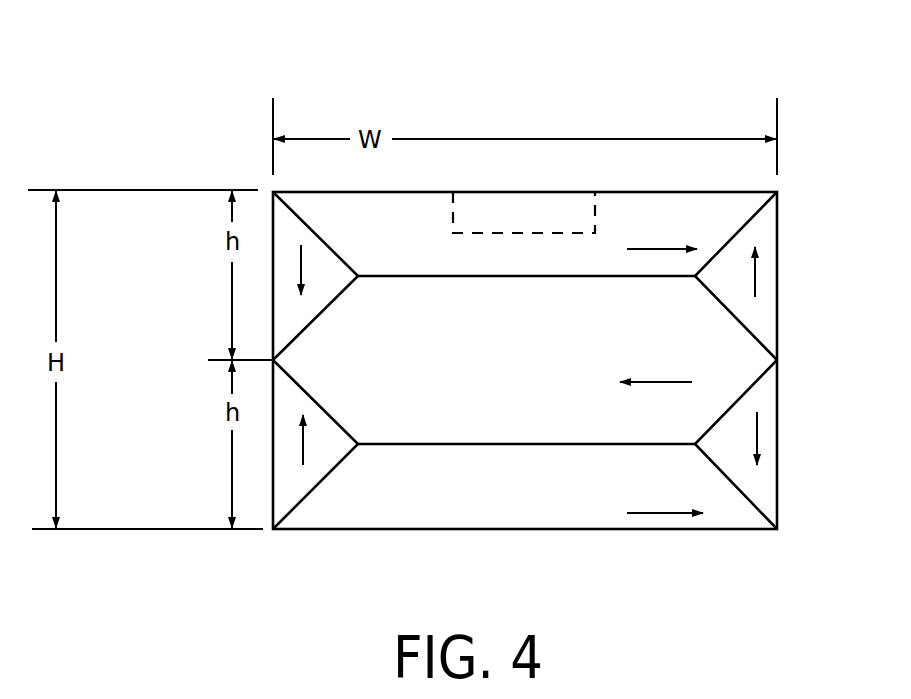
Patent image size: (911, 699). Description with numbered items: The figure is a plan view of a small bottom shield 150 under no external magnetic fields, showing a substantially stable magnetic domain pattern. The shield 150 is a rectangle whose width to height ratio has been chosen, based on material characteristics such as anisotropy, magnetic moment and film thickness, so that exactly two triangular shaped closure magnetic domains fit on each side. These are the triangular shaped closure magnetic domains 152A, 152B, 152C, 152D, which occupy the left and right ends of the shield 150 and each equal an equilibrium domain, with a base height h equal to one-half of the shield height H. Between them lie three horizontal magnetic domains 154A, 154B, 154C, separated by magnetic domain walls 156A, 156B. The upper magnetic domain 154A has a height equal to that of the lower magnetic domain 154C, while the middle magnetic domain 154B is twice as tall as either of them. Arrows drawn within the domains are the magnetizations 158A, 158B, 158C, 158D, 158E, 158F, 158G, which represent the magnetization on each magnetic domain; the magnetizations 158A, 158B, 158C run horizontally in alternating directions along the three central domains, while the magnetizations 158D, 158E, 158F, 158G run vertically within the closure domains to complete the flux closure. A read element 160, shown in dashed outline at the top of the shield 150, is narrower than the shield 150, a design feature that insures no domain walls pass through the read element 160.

The shield 150 is at (603, 124).
The triangular shaped closure magnetic domain 152A is at (290, 261).
The triangular shaped closure magnetic domain 152B is at (768, 308).
The triangular shaped closure magnetic domain 152C is at (295, 492).
The triangular shaped closure magnetic domain 152D is at (767, 469).
The magnetic domain 154A is at (405, 246).
The magnetic domain 154B is at (520, 360).
The magnetic domain 154C is at (520, 486).
The magnetic domain wall 156A is at (478, 277).
The magnetic domain wall 156B is at (480, 445).
The magnetization 158A is at (690, 240).
The magnetization 158B is at (690, 374).
The magnetization 158C is at (690, 508).
The magnetization 158D is at (300, 269).
The magnetization 158E is at (757, 275).
The magnetization 158F is at (302, 438).
The magnetization 158G is at (758, 433).
The read element 160 is at (497, 233).